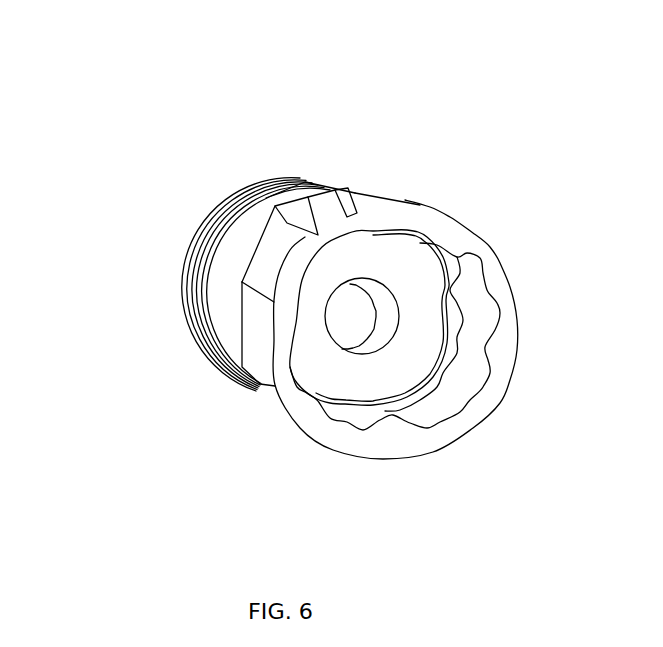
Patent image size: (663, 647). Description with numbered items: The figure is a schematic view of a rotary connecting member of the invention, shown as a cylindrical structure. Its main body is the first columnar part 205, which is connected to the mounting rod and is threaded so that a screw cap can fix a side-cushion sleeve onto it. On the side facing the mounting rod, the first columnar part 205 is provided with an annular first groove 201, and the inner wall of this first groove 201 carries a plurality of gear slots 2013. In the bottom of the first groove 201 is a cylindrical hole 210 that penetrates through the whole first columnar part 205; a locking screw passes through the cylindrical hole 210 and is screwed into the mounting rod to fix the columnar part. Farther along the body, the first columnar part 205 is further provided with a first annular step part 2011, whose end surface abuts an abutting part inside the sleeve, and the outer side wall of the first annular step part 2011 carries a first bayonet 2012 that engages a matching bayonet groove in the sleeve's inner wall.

The first columnar part 205 is at (255, 243).
The first annular step part 2011 is at (250, 390).
The first bayonet 2012 is at (322, 178).
The first groove 201 is at (362, 262).
The cylindrical hole 210 is at (343, 297).
The gear slots 2013 is at (383, 430).